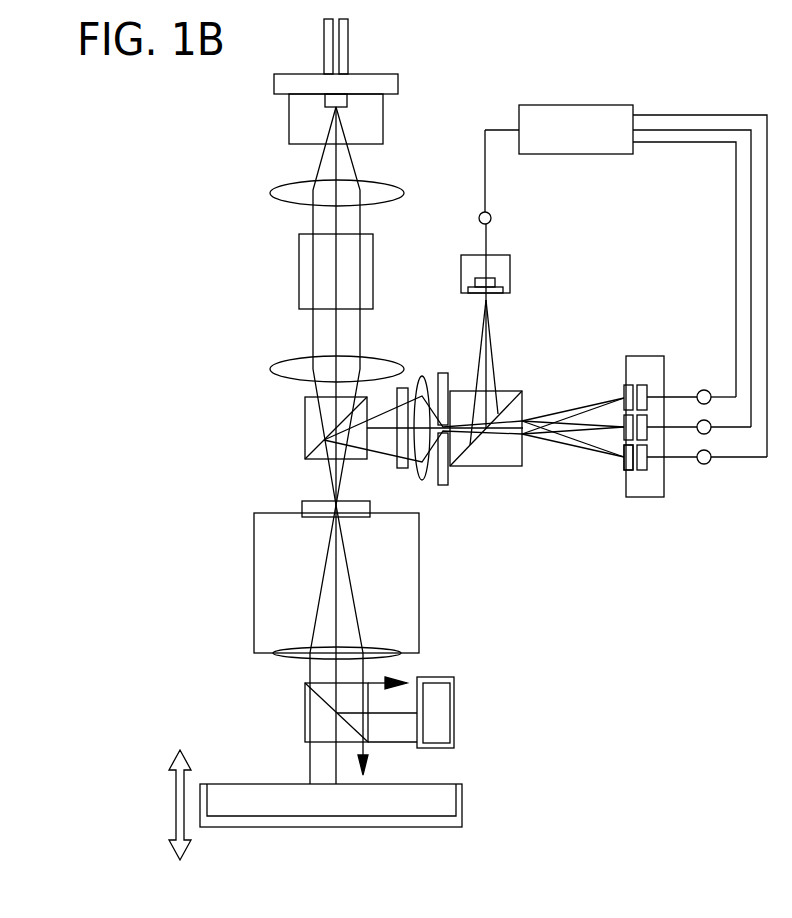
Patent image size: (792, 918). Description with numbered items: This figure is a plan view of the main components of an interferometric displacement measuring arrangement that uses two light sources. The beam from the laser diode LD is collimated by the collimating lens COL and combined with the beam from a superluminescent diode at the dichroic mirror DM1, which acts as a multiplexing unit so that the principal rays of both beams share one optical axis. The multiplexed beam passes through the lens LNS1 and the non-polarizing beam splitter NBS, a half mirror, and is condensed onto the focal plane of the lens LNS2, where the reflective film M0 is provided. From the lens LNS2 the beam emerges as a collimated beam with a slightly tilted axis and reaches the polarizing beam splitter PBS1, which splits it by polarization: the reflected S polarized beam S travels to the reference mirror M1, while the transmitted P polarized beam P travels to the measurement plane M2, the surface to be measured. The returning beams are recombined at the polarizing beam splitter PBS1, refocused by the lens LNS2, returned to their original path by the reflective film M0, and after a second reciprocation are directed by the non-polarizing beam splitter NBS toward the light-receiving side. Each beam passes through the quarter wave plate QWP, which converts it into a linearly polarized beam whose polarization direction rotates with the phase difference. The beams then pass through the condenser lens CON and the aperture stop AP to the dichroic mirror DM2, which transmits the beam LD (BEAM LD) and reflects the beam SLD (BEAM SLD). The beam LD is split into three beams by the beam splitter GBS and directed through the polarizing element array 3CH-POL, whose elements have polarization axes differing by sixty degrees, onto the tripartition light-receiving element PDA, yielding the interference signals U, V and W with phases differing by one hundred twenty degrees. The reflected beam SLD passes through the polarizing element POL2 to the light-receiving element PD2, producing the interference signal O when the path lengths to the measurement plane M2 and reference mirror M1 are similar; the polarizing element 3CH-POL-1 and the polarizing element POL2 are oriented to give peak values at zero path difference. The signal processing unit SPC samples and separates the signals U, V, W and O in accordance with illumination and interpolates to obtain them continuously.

The laser diode LD is at (383, 113).
The collimating lens COL is at (290, 188).
The dichroic mirror DM1 is at (300, 255).
The lens LNS1 is at (285, 368).
The non-polarizing beam splitter NBS is at (305, 413).
The reflective film M0 is at (304, 501).
The quarter wave plate QWP is at (402, 468).
The condenser lens CON is at (420, 383).
The aperture stop AP is at (444, 373).
The dichroic mirror DM2 is at (461, 485).
The beam splitter GBS is at (505, 391).
The beam SLD BEAM SLD is at (489, 327).
The beam LD BEAM LD is at (547, 440).
The light-receiving element PD2 is at (493, 275).
The polarizing element POL2 is at (503, 287).
The interference signal O is at (491, 213).
The signal processing unit SPC is at (626, 281).
The tripartition light-receiving element PDA is at (647, 468).
The polarizing element array 3CH-POL is at (636, 470).
The polarizing element 3CH-POL-1 is at (618, 470).
The interference signal U is at (691, 387).
The interference signal V is at (699, 417).
The interference signal W is at (707, 447).
The lens LNS2 is at (295, 655).
The polarizing beam splitter PBS1 is at (305, 718).
The S polarized beam S is at (410, 682).
The reference mirror M1 is at (447, 700).
The P polarized beam P is at (374, 762).
The measurement plane M2 is at (447, 801).